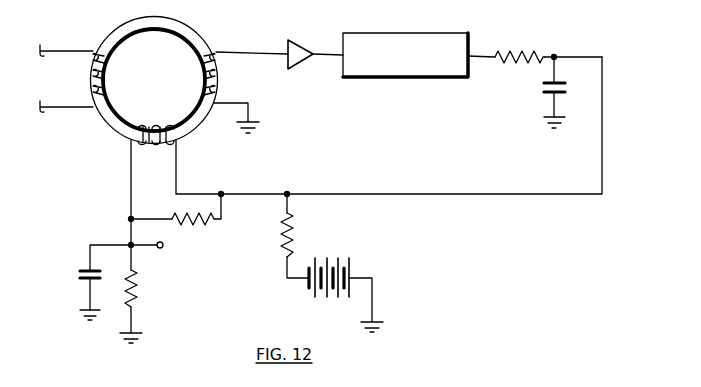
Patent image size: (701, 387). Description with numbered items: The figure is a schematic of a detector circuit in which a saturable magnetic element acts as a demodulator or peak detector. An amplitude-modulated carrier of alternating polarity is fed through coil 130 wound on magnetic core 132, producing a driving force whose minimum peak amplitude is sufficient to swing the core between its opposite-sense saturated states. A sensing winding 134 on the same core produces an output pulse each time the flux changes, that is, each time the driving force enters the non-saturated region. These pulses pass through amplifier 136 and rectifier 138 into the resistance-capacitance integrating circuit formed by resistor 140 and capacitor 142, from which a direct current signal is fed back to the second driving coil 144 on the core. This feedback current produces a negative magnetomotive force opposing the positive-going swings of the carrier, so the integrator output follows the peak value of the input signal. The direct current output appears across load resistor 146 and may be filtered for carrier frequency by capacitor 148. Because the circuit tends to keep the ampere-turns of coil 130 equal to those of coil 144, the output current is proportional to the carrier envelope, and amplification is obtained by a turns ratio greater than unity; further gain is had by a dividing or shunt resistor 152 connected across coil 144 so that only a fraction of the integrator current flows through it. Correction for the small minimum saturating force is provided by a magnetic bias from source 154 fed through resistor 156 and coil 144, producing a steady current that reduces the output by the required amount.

The coil 130 is at (108, 86).
The magnetic core 132 is at (118, 37).
The sensing winding 134 is at (218, 89).
The amplifier 136 is at (294, 63).
The rectifier 138 is at (453, 35).
The resistor 140 is at (526, 52).
The capacitor 142 is at (560, 93).
The second driving coil 144 is at (159, 145).
The load resistor 146 is at (139, 290).
The capacitor 148 is at (86, 280).
The shunt resistor 152 is at (204, 223).
The bias source 154 is at (342, 268).
The resistor 156 is at (292, 230).